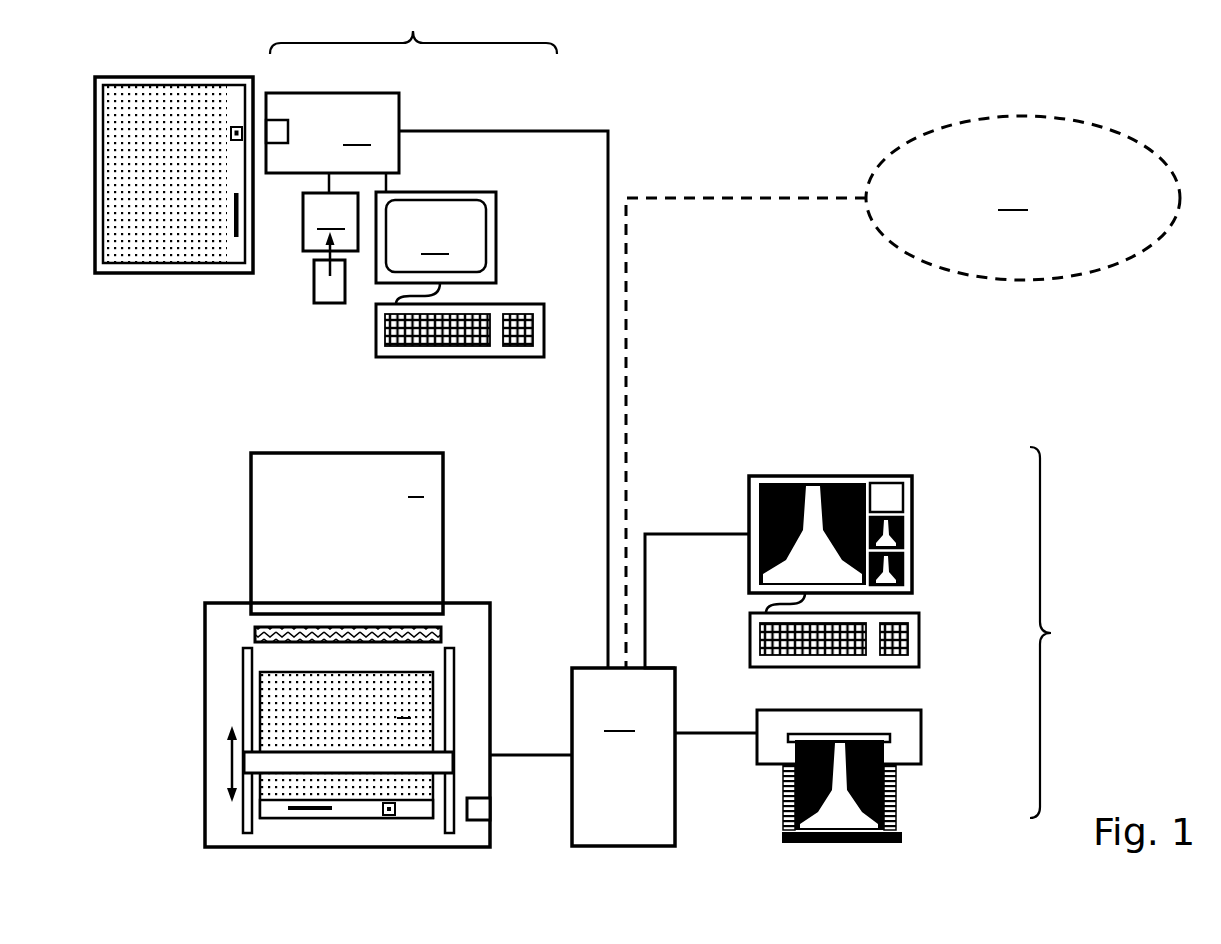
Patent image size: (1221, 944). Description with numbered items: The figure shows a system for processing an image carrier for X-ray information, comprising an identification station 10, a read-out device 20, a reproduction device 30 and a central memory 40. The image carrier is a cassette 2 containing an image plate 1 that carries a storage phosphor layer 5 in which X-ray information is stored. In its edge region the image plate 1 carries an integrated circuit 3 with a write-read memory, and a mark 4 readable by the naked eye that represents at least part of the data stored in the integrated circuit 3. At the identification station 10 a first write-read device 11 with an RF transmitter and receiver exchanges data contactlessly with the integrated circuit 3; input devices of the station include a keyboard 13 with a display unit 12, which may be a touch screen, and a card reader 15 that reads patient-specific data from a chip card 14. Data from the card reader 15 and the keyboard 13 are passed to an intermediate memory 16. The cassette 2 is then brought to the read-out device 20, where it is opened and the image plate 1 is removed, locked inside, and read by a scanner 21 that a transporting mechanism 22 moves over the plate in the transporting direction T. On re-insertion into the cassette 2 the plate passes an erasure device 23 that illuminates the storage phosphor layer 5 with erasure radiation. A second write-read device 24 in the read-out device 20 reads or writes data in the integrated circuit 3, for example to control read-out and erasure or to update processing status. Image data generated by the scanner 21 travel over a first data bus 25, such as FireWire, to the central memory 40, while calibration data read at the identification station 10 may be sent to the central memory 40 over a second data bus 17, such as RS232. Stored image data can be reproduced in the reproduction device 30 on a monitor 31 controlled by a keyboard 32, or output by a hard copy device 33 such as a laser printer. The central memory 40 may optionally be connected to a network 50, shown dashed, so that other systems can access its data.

The image plate 1 is at (173, 263).
The cassette 2 is at (118, 273).
The integrated circuit 3 is at (235, 127).
The mark 4 is at (236, 237).
The storage phosphor layer 5 is at (167, 180).
The identification station 10 is at (413, 27).
The first write-read device 11 is at (283, 125).
The display unit 12 is at (436, 248).
The keyboard 13 is at (437, 357).
The card 14 is at (330, 294).
The card reader 15 is at (330, 222).
The intermediate memory 16 is at (332, 143).
The second data bus 17 is at (608, 178).
The read-out device 20 is at (211, 833).
The scanner 21 is at (283, 763).
The transporting mechanism 22 is at (246, 668).
The erasure device 23 is at (258, 632).
The second write-read device 24 is at (482, 808).
The first data bus 25 is at (522, 753).
The reproduction device 30 is at (1062, 632).
The monitor 31 is at (907, 496).
The keyboard 32 is at (920, 631).
The hard copy device 33 is at (906, 714).
The central memory 40 is at (623, 757).
The network 50 is at (903, 392).
The transporting direction T is at (229, 763).